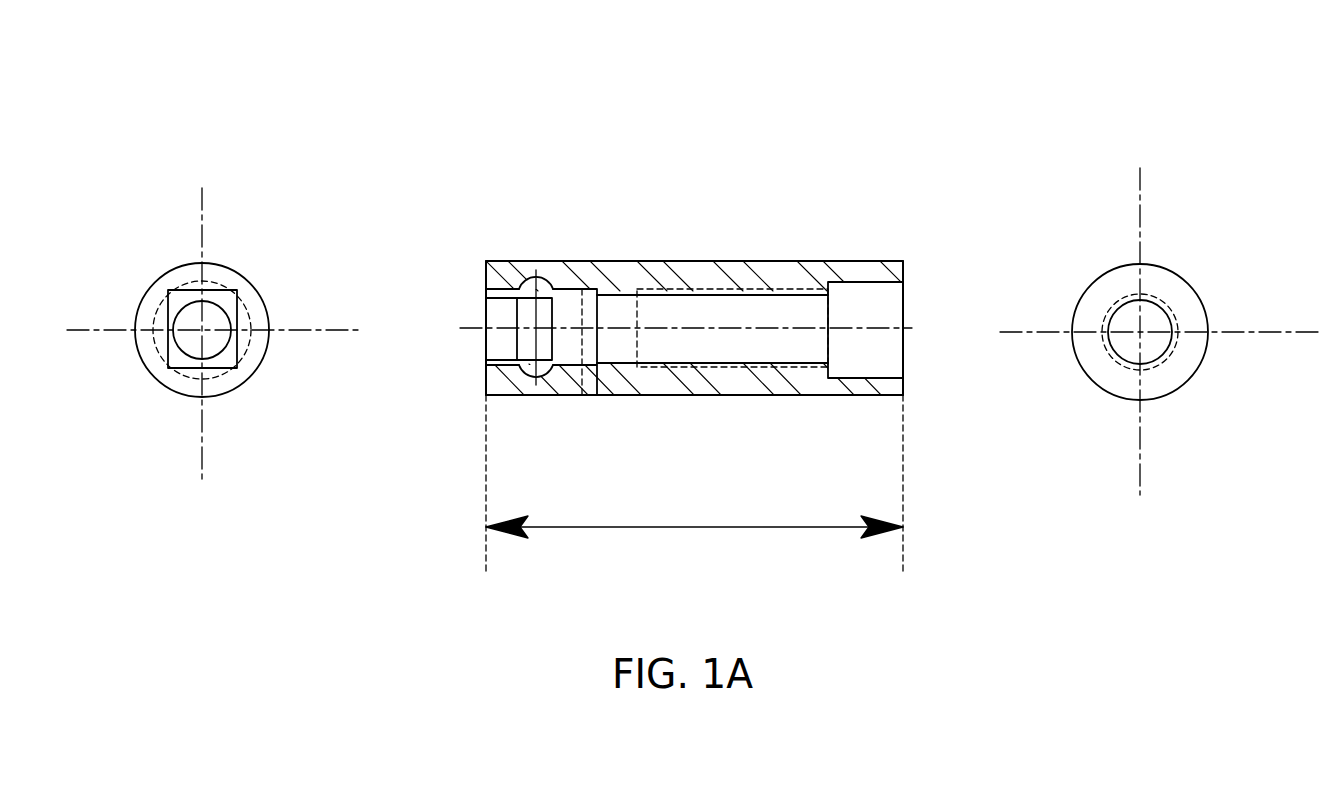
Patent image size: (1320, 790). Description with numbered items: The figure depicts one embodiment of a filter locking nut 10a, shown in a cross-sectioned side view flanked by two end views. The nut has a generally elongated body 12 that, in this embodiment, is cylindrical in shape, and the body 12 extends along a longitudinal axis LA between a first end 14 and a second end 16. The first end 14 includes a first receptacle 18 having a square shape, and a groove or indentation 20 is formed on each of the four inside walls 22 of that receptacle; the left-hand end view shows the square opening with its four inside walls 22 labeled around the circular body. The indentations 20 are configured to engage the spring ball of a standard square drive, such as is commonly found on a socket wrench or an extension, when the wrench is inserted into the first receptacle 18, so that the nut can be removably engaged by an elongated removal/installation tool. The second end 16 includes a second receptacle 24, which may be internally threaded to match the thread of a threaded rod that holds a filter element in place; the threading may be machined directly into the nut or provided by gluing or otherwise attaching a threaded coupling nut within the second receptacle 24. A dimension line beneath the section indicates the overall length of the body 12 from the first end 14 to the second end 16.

The filter locking nut 10a is at (862, 95).
The generally elongated body 12 is at (694, 483).
The first end 14 is at (486, 272).
The second end 16 is at (903, 273).
The first receptacle 18 is at (493, 354).
The indentation 20 is at (547, 280).
The inside walls 22 is at (188, 284).
The second receptacle 24 is at (903, 352).
The longitudinal axis LA is at (722, 330).